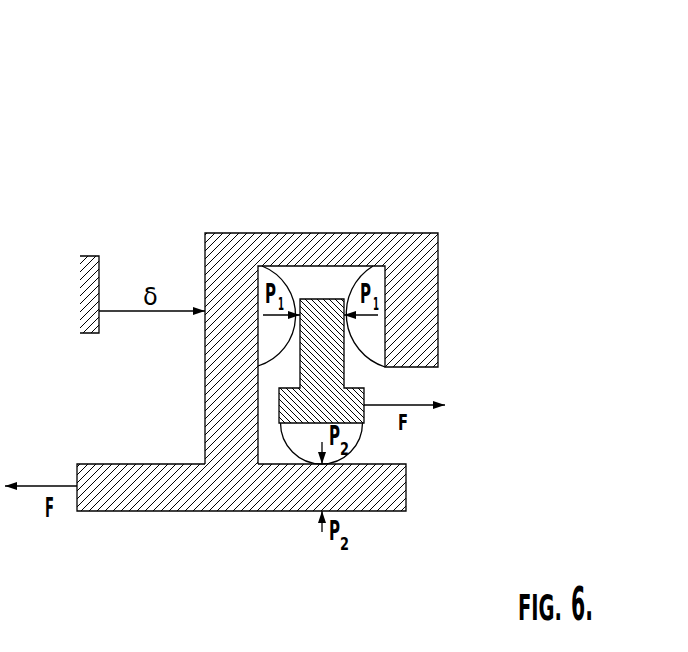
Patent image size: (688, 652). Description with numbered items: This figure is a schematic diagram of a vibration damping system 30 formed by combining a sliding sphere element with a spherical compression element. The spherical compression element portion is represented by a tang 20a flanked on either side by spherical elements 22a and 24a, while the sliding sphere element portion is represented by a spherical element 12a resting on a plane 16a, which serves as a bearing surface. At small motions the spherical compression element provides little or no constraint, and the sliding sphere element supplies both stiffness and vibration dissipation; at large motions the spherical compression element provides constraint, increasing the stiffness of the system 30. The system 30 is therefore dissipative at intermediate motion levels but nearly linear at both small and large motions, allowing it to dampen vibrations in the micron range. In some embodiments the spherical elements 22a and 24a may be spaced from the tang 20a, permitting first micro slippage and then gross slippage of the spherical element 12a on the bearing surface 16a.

The vibration damping system 30 is at (466, 188).
The spherical element 12a is at (360, 432).
The plane 16a is at (372, 464).
The tang 20a is at (328, 301).
The spherical element 22a is at (276, 281).
The spherical element 24a is at (372, 279).